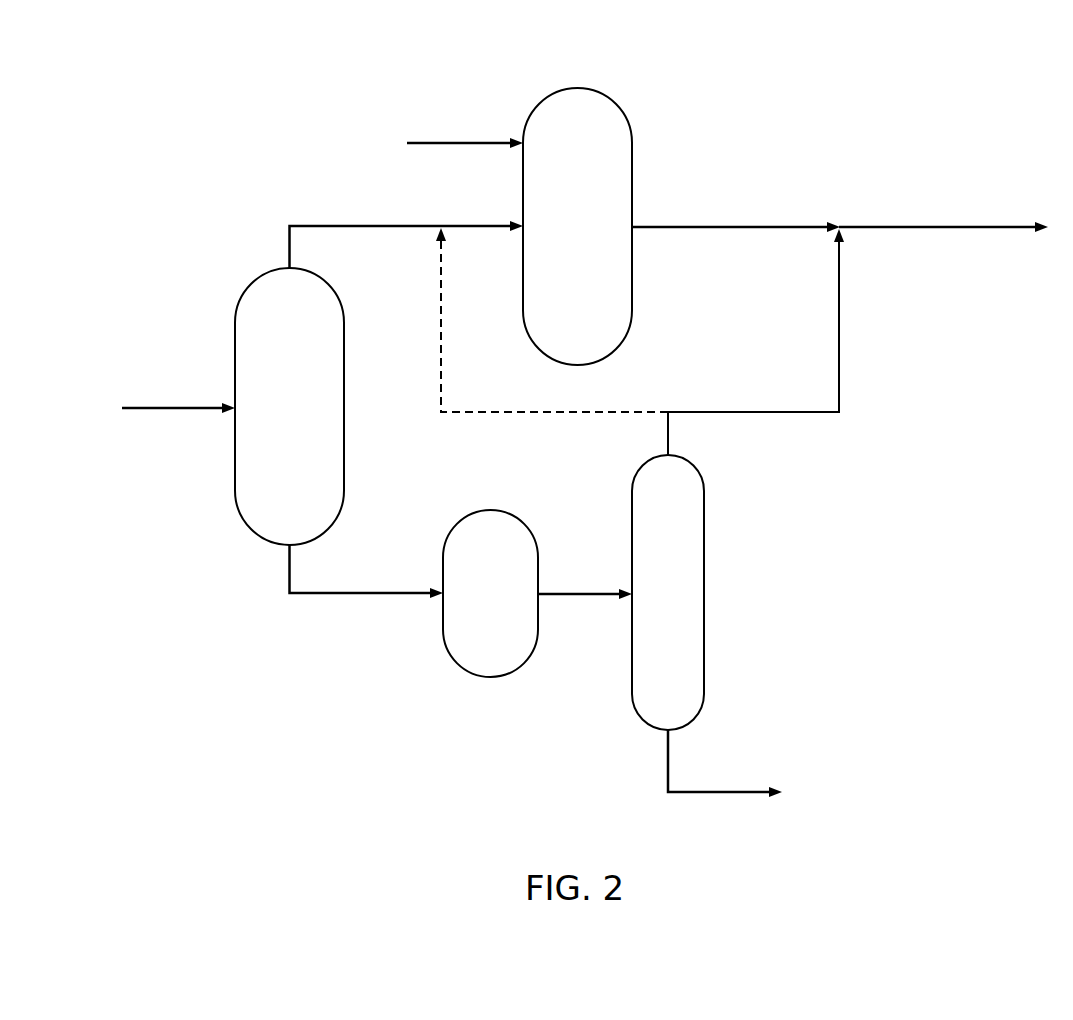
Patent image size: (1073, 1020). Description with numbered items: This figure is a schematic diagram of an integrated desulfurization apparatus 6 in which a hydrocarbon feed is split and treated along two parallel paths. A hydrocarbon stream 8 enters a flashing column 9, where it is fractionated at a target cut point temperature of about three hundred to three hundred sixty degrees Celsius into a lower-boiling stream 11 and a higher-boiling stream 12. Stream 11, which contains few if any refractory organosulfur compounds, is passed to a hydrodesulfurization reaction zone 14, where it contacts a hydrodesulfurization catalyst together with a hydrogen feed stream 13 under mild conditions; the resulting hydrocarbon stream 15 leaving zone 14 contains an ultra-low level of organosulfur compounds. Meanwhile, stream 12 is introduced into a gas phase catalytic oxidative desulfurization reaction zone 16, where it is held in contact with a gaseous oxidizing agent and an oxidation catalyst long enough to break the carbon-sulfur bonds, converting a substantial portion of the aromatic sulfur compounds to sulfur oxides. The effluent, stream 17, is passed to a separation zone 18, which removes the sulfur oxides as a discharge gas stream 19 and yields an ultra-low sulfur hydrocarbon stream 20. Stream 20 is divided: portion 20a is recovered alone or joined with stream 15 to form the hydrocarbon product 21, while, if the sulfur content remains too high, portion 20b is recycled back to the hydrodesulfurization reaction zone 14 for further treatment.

The integrated desulfurization apparatus 6 is at (112, 97).
The hydrocarbon stream 8 is at (165, 405).
The flashing column 9 is at (291, 413).
The stream boiling below the target cut point temperature 11 is at (327, 224).
The stream boiling at or above the target cut point temperature 12 is at (356, 591).
The hydrogen feed stream 13 is at (444, 141).
The hydrodesulfurization reaction zone 14 is at (588, 232).
The hydrocarbon stream 15 is at (717, 225).
The gas phase catalytic oxidative desulfurization reaction zone 16 is at (500, 608).
The stream from the gas phase catalytic oxidative desulfurization zone 17 is at (588, 592).
The separation zone 18 is at (682, 608).
The discharge gas stream 19 is at (741, 790).
The hydrocarbon stream 20 is at (668, 432).
The portion of stream 20 recovered as product 20a is at (773, 410).
The recycle stream 20b is at (510, 410).
The hydrocarbon product 21 is at (903, 225).